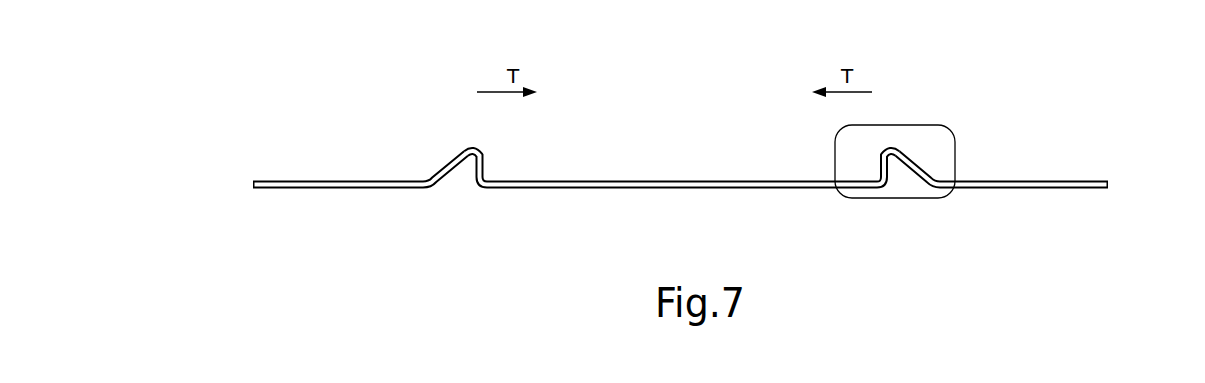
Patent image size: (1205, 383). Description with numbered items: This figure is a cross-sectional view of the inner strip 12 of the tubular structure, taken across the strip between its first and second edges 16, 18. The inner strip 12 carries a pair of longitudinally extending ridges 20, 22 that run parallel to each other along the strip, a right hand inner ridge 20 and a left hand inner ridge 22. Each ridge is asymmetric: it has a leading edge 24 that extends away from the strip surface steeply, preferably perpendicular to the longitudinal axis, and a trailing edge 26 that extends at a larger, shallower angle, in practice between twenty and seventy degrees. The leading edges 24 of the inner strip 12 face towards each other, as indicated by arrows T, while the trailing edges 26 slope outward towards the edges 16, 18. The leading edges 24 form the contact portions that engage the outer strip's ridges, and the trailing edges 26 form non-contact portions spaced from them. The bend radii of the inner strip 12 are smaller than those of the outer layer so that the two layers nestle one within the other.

The inner strip 12 is at (648, 185).
The first edge 16 is at (1108, 185).
The second edge 18 is at (253, 182).
The right hand inner ridge 20 is at (893, 145).
The left hand inner ridge 22 is at (468, 144).
The leading edge 24 is at (484, 167).
The trailing edge 26 is at (443, 160).